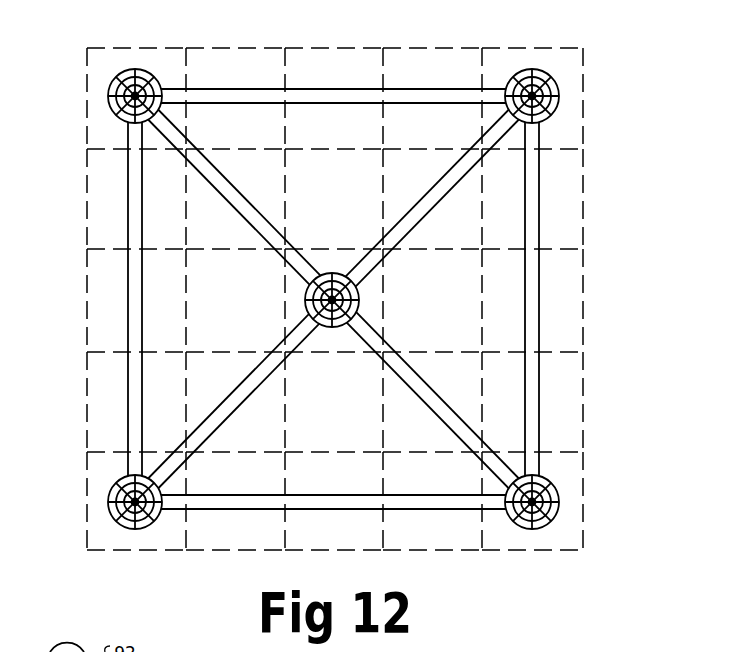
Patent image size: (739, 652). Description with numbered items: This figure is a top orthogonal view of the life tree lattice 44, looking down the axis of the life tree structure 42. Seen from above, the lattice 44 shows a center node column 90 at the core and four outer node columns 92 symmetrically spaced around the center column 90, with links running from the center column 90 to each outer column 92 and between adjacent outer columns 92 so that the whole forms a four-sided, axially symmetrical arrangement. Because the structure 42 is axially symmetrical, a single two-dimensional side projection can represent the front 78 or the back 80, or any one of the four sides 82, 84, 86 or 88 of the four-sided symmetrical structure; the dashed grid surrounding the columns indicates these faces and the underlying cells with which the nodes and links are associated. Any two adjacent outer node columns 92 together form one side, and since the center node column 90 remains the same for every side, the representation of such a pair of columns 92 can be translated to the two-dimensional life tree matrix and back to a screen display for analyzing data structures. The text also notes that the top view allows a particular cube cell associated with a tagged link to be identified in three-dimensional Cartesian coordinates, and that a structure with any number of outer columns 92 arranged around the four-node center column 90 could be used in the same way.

The life tree structure 42 is at (550, 122).
The life tree lattice 44 is at (583, 218).
The front 78 is at (447, 552).
The back 80 is at (432, 48).
The side 82 is at (537, 552).
The side 84 is at (583, 415).
The side 86 is at (225, 48).
The side 88 is at (86, 200).
The center node column 90 is at (358, 308).
The outer node columns 92 is at (108, 97).